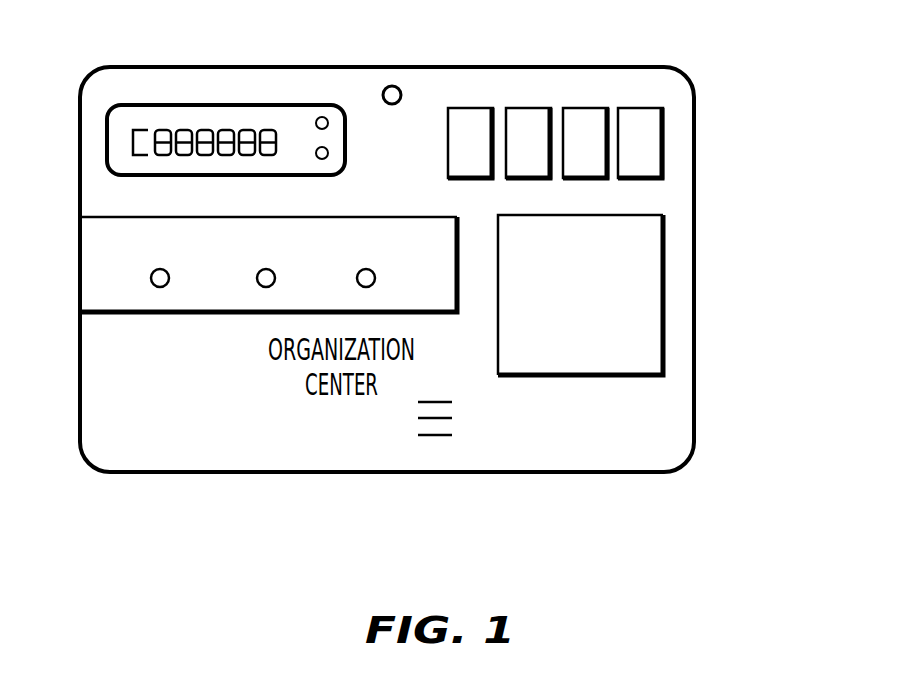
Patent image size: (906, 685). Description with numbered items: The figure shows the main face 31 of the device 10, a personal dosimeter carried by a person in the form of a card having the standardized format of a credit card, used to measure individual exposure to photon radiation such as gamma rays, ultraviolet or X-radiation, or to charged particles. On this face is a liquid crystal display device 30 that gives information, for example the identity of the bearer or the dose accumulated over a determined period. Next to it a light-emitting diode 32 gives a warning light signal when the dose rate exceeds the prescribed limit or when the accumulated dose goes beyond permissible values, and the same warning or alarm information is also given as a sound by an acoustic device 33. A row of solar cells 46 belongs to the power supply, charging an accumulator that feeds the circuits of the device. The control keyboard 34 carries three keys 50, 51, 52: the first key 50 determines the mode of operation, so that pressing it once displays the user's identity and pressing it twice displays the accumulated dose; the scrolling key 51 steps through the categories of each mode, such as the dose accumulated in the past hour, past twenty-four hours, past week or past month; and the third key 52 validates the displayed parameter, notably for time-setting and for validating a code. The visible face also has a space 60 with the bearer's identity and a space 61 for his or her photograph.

The device 10 is at (696, 202).
The liquid crystal display device 30 is at (135, 108).
The main face 31 is at (133, 460).
The light-emitting diode 32 is at (390, 85).
The acoustic device 33 is at (430, 418).
The control keyboard 34 is at (80, 293).
The solar cell 46 is at (528, 110).
The mode key 50 is at (151, 274).
The scrolling key 51 is at (274, 283).
The validation key 52 is at (374, 283).
The space with the bearer's identity 60 is at (597, 452).
The space for photograph 61 is at (652, 288).